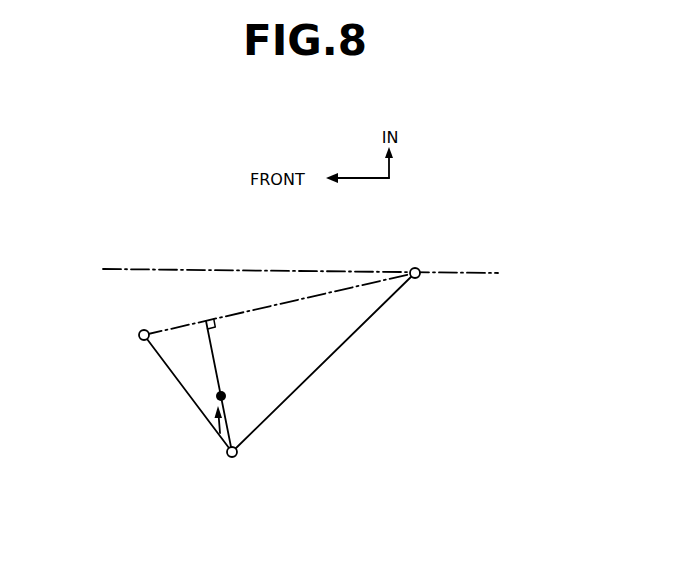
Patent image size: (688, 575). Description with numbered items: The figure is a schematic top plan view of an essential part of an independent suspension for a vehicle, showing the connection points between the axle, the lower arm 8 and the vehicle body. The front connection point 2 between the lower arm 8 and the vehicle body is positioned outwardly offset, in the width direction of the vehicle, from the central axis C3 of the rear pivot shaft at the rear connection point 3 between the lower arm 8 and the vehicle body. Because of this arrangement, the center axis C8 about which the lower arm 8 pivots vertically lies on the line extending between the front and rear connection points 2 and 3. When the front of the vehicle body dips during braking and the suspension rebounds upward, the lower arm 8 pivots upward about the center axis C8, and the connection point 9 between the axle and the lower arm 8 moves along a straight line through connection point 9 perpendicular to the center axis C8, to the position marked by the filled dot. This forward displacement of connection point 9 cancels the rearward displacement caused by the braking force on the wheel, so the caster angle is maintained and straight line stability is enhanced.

The front connection point 2 is at (139, 332).
The rear connection point 3 is at (419, 269).
The lower arm 8 is at (334, 369).
The connection point 9 is at (240, 454).
The central axis C3 is at (447, 276).
The center axis of pivot C8 is at (285, 300).